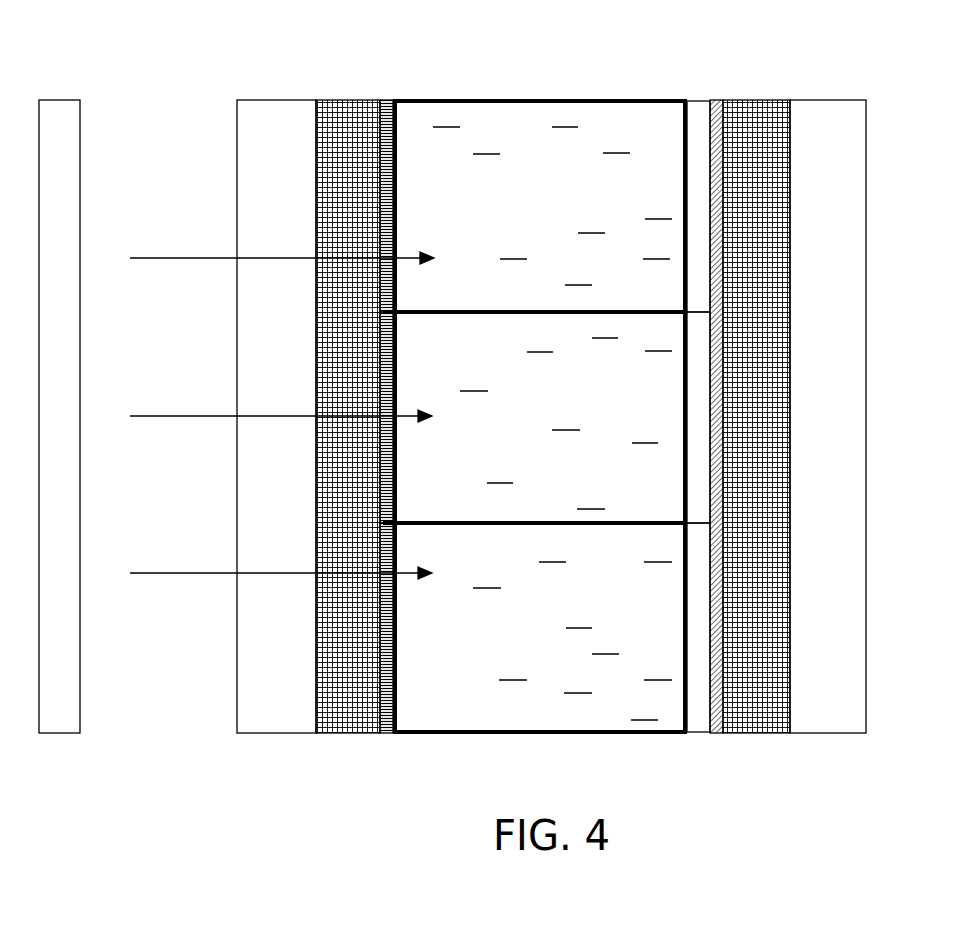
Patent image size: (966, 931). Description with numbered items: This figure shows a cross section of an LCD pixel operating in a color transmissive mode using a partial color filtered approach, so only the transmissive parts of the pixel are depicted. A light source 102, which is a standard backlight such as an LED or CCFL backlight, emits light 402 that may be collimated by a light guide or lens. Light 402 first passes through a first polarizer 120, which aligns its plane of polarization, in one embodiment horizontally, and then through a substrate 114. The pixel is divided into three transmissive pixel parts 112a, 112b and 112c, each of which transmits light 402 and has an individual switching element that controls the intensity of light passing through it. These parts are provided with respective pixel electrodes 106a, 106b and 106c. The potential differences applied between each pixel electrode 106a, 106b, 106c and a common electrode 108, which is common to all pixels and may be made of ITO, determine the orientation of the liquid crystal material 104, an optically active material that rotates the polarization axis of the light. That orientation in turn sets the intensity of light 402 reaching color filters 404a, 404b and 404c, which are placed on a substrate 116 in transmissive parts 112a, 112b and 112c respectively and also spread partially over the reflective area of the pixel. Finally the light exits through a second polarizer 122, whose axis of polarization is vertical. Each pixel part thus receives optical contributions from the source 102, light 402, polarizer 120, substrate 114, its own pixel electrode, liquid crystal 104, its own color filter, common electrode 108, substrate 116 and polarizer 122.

The light source 102 is at (58, 733).
The liquid crystal material 104 is at (645, 115).
The pixel electrode 106a is at (390, 101).
The pixel electrode 106b is at (390, 379).
The pixel electrode 106c is at (383, 735).
The common electrode 108 is at (718, 735).
The transmissive pixel part 112a is at (495, 223).
The transmissive pixel part 112b is at (495, 452).
The transmissive pixel part 112c is at (495, 637).
The substrate 114 is at (344, 100).
The substrate 116 is at (752, 100).
The first polarizer 120 is at (277, 101).
The second polarizer 122 is at (830, 100).
The light 402 is at (197, 573).
The color filter 404a is at (698, 193).
The color filter 404b is at (698, 428).
The color filter 404c is at (698, 614).